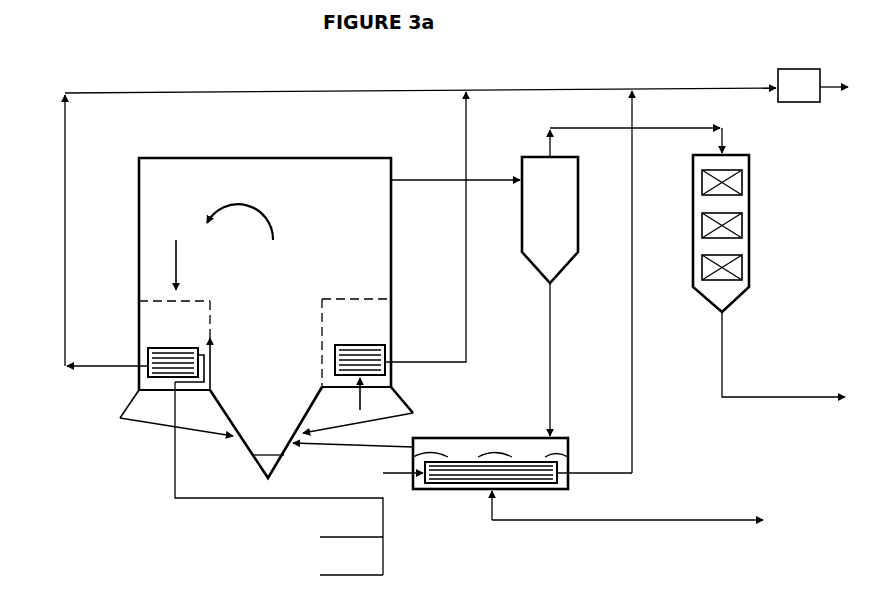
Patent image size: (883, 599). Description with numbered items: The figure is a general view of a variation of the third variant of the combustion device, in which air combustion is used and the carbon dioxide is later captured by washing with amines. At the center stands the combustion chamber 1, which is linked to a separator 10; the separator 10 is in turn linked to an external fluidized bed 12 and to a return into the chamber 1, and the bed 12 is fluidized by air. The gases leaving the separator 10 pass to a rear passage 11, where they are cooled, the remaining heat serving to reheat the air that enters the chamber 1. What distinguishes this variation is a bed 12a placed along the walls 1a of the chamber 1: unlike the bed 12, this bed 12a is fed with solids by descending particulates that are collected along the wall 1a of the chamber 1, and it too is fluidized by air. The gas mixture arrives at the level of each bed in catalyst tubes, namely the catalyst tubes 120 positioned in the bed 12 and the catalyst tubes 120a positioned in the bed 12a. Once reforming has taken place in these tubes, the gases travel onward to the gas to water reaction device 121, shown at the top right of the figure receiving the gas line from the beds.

The combustion chamber 1 is at (266, 318).
The walls 1a is at (139, 243).
The separator 10 is at (622, 282).
The rear passage 11 is at (718, 287).
The external fluidized bed 12 is at (573, 479).
The bed 12a is at (265, 354).
The catalyst tubes 120 is at (478, 475).
The catalyst tubes 120a is at (165, 368).
The gas to water reaction device 121 is at (813, 85).